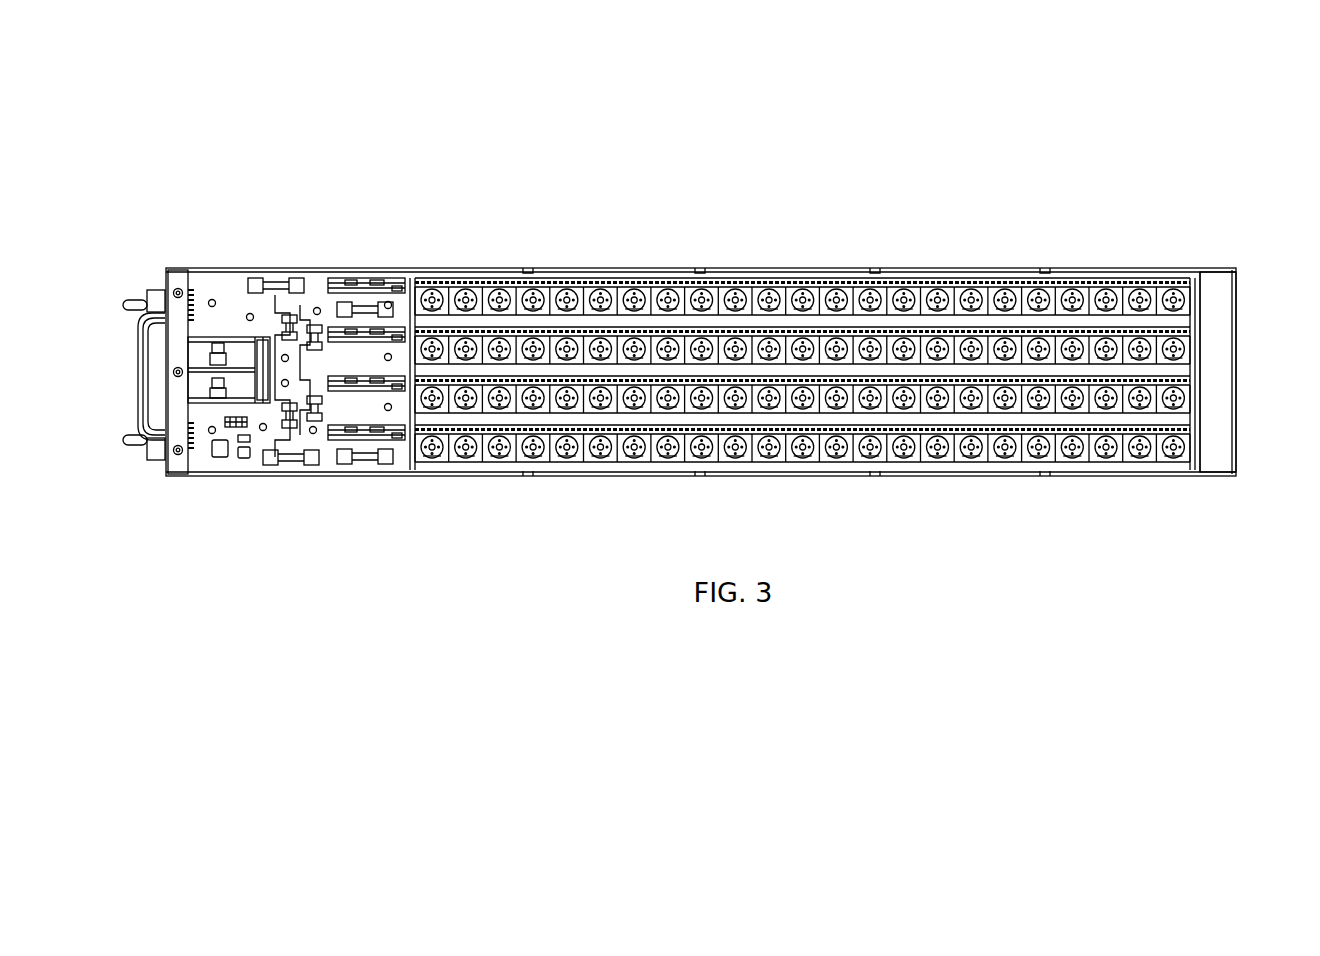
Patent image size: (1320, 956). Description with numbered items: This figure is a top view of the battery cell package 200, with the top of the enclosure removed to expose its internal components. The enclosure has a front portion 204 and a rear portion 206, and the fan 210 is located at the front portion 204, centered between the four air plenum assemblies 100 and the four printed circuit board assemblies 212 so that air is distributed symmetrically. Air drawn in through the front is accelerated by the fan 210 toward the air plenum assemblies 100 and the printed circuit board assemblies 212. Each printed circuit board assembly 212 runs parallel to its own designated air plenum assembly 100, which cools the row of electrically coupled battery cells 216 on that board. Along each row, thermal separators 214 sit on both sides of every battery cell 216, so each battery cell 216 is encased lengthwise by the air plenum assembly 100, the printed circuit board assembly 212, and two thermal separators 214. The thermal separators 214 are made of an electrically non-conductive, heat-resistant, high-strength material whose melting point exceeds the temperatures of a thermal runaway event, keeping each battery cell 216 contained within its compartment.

The air plenum assembly 100 is at (1188, 320).
The battery cell package 200 is at (283, 137).
The front portion 204 is at (172, 462).
The rear portion 206 is at (1237, 286).
The fan 210 is at (232, 342).
The printed circuit board assembly 212 is at (353, 288).
The thermal separator 214 is at (648, 290).
The battery cell 216 is at (808, 290).